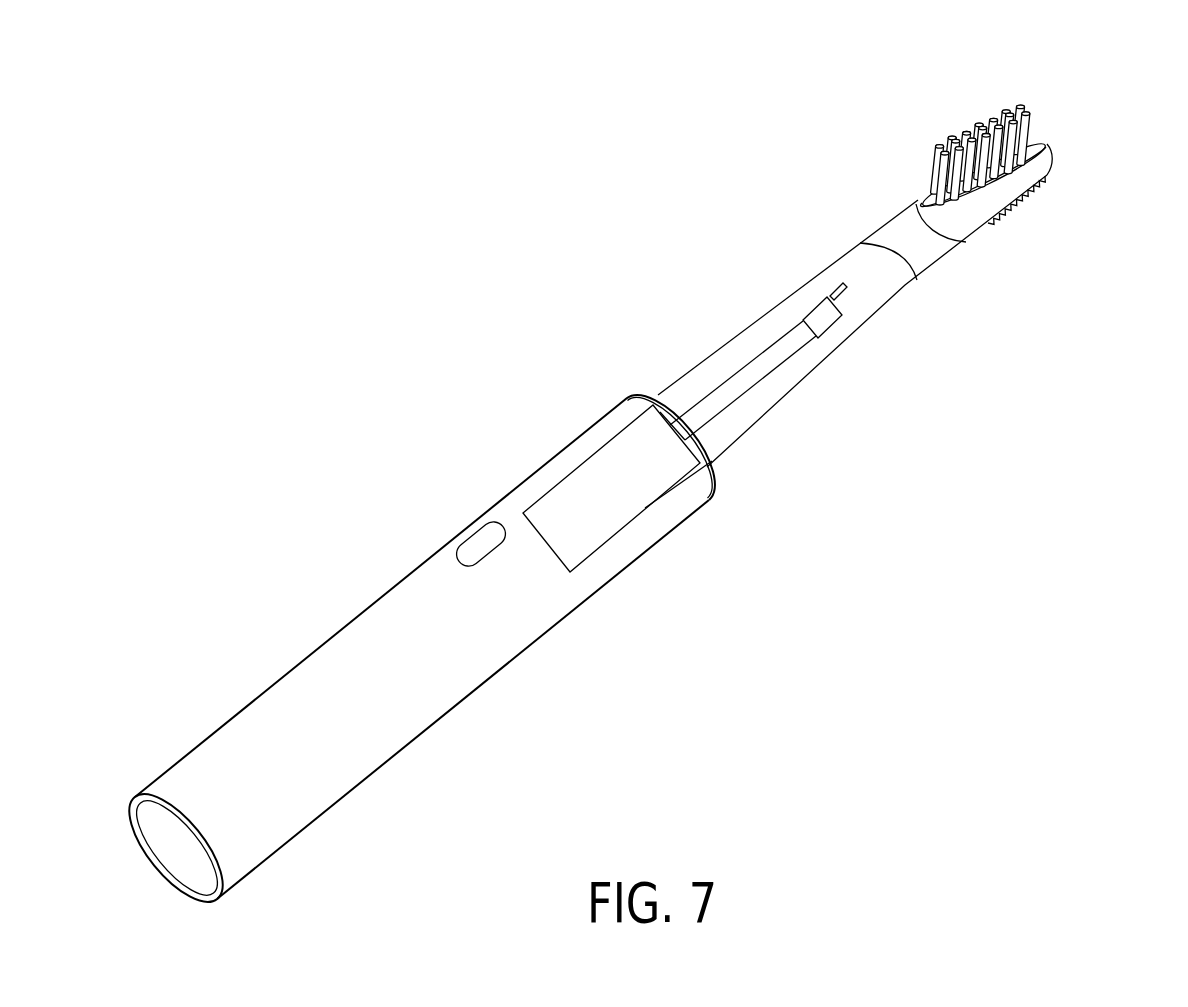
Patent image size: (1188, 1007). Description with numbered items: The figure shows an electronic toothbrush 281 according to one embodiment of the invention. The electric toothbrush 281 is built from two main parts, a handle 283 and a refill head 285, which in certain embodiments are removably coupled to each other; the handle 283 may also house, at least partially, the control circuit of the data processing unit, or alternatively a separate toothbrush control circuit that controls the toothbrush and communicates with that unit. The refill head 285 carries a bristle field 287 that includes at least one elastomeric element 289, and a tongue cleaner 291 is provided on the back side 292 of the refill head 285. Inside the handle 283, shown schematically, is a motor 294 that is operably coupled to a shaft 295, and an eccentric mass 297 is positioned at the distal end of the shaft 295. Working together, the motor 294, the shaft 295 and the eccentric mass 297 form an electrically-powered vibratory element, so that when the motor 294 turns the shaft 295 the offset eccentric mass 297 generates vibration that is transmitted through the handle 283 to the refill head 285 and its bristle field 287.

The electronic toothbrush 281 is at (908, 430).
The handle 283 is at (422, 737).
The refill head 285 is at (765, 320).
The bristle field 287 is at (1023, 104).
The elastomeric element 289 is at (1028, 141).
The tongue cleaner 291 is at (1008, 215).
The back side 292 is at (978, 258).
The motor 294 is at (650, 507).
The shaft 295 is at (727, 405).
The eccentric mass 297 is at (838, 322).